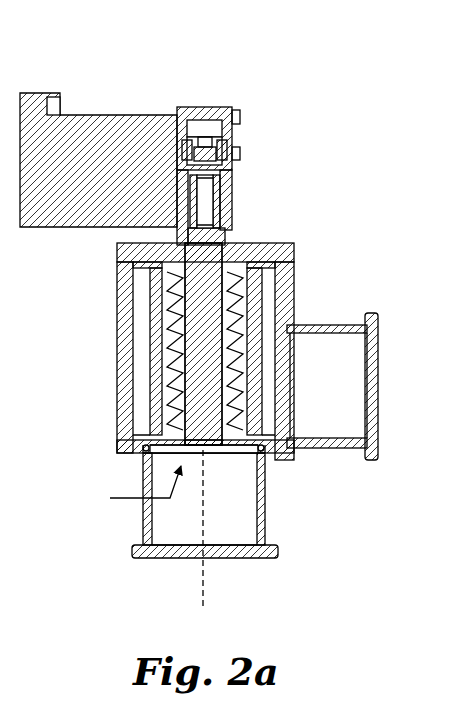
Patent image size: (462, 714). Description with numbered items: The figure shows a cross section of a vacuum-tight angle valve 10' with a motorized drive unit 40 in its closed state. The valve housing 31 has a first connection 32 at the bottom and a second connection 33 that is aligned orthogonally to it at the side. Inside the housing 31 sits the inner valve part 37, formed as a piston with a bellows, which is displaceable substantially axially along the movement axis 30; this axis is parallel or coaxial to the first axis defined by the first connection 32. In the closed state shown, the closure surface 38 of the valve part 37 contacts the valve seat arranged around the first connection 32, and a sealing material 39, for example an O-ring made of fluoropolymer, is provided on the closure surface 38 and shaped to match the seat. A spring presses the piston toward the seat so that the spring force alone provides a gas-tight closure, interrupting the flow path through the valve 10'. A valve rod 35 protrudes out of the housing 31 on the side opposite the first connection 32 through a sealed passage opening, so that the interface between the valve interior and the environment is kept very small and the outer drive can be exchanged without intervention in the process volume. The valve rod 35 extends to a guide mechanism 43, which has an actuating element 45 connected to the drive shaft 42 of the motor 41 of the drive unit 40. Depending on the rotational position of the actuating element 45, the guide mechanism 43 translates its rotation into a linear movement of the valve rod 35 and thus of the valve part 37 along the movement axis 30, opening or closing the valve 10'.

The vacuum-tight angle valve 10' is at (237, 312).
The movement axis 30 is at (200, 585).
The valve housing 31 is at (127, 345).
The first connection 32 is at (163, 530).
The second connection 33 is at (358, 372).
The valve rod 35 is at (206, 251).
The inner valve part 37 is at (124, 489).
The closure surface 38 is at (252, 456).
The sealing material 39 is at (262, 450).
The motorized drive unit 40 is at (127, 62).
The motor 41 is at (110, 222).
The drive shaft 42 is at (232, 170).
The guide mechanism 43 is at (209, 95).
The actuating element 45 is at (204, 192).